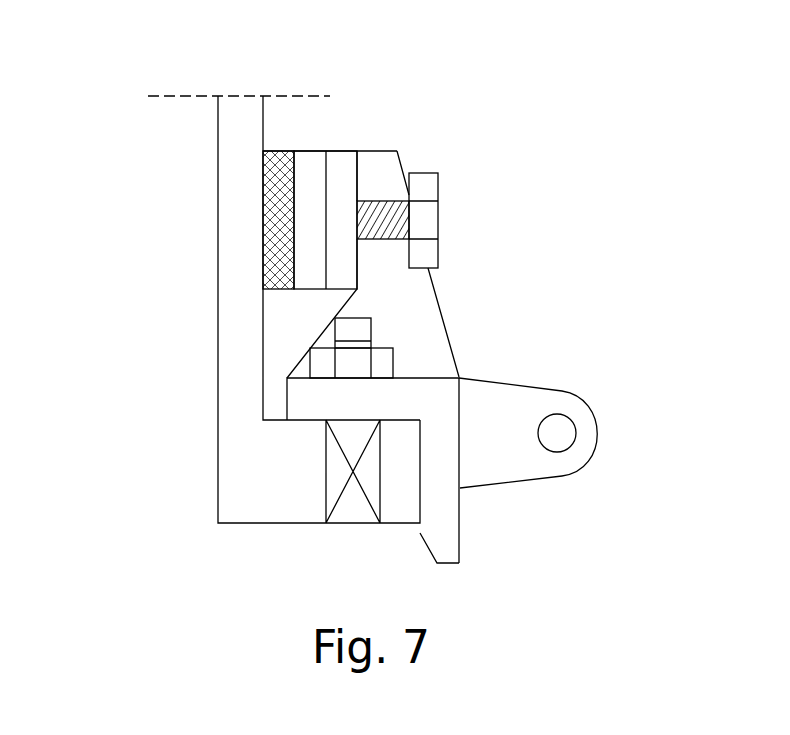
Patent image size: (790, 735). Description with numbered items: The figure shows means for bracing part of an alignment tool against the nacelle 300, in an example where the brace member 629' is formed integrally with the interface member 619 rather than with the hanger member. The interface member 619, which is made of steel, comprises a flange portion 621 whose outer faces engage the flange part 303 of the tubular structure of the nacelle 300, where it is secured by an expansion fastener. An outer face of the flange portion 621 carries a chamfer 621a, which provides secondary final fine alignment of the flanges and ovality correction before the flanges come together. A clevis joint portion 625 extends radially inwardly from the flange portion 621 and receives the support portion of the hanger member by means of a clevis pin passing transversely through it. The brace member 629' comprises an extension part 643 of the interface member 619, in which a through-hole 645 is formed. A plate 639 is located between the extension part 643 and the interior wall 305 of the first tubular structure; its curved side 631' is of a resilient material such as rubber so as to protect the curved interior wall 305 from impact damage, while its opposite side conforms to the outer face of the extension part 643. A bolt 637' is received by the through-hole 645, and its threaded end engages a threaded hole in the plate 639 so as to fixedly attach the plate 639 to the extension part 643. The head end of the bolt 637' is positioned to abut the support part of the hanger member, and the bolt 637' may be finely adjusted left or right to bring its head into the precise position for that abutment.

The nacelle 300 is at (128, 182).
The flange part 303 is at (255, 483).
The interior wall 305 is at (263, 117).
The interface member 619 is at (422, 364).
The flange portion 621 is at (309, 395).
The chamfer 621a is at (428, 547).
The clevis joint portion 625 is at (497, 454).
The brace member 629' is at (358, 204).
The curved side 631' is at (203, 220).
The bolt 637' is at (481, 213).
The plate 639 is at (308, 228).
The extension part 643 is at (442, 310).
The through-hole 645 is at (384, 200).